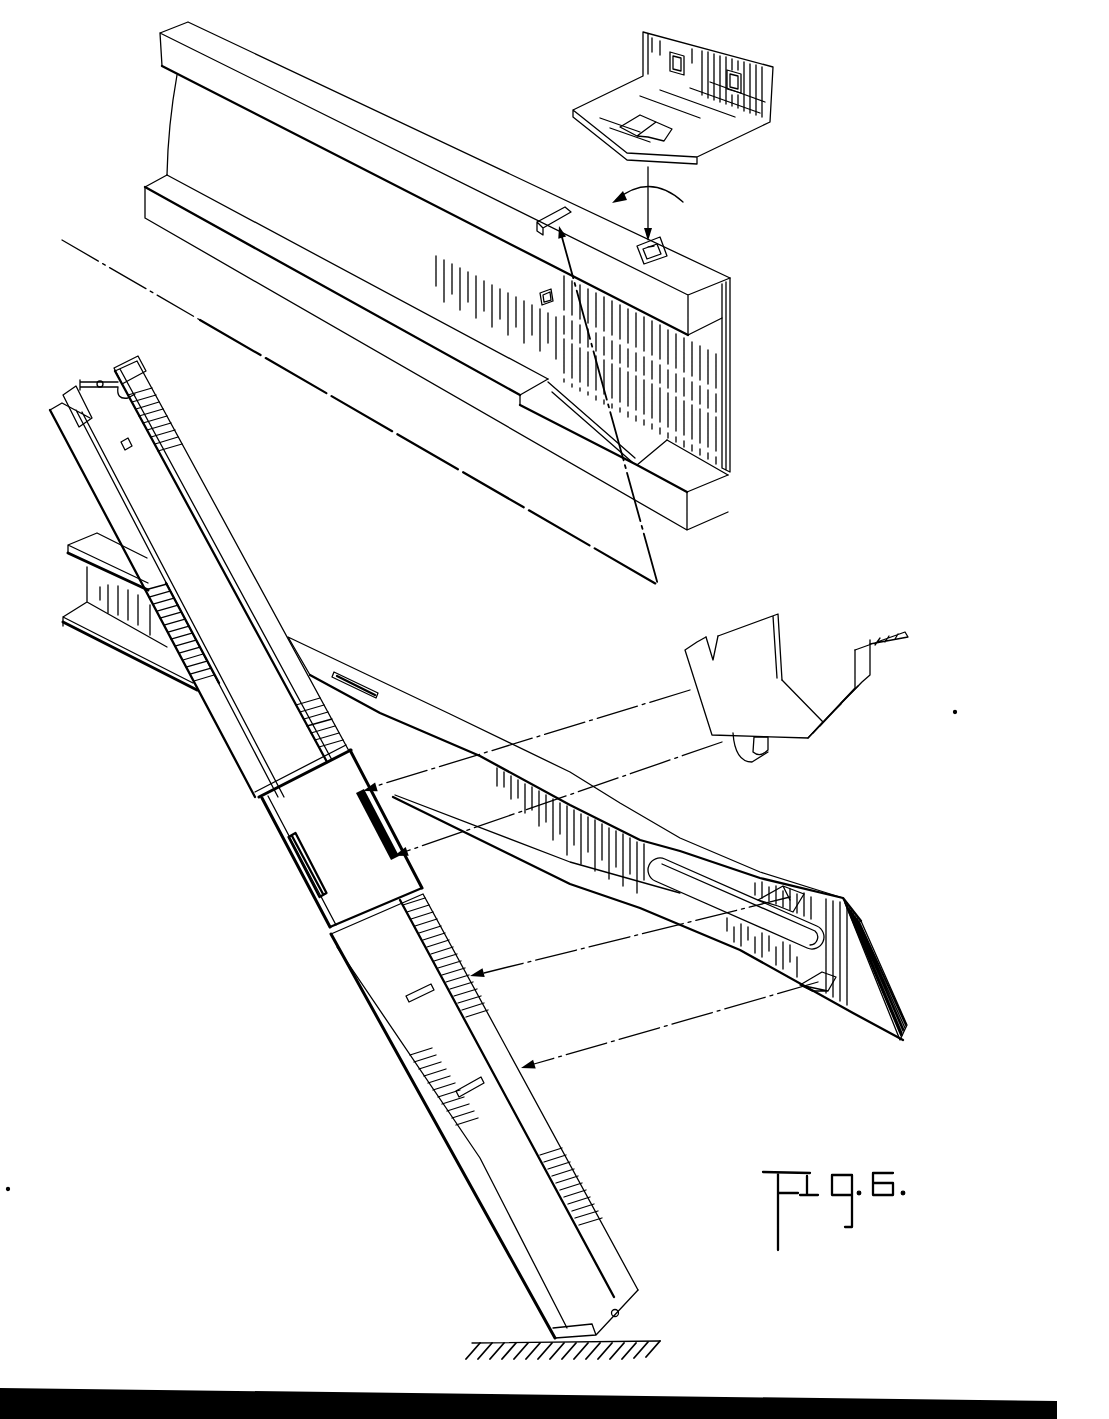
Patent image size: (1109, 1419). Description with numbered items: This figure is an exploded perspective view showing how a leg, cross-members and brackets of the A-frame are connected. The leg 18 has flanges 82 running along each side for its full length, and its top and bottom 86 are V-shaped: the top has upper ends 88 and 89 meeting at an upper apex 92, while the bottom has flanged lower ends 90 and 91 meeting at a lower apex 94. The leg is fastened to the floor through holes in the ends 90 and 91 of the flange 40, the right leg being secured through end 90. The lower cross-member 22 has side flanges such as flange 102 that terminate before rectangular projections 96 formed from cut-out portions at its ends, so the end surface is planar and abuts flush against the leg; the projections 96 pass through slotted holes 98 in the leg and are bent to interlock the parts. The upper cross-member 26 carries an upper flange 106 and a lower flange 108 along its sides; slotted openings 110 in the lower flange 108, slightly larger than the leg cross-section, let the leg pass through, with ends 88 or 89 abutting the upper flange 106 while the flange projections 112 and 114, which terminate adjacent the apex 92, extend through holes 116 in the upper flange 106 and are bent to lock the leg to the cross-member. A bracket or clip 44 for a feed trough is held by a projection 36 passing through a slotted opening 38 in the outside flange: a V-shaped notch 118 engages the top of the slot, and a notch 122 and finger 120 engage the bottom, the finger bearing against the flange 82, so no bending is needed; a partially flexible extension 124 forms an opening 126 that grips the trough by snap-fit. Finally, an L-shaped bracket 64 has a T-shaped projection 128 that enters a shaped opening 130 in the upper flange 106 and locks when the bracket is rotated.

The leg 18 is at (385, 947).
The lower cross-member 22 is at (628, 850).
The upper cross-member 26 is at (368, 254).
The projection 36 is at (718, 692).
The slotted opening 38 is at (310, 862).
The flange 40 is at (652, 1308).
The bracket (clip) 44 is at (760, 632).
The bracket 64 is at (728, 118).
The flange 82 is at (146, 574).
The bottom 86 is at (655, 1248).
The upper end 88 is at (136, 393).
The upper end 89 is at (93, 409).
The flanged lower end 90 is at (567, 1326).
The flanged lower end 91 is at (640, 1302).
The upper apex 92 is at (99, 380).
The lower apex 94 is at (640, 1340).
The rectangular projection 96 is at (790, 888).
The slotted hole 98 is at (425, 987).
The flange 102 is at (412, 722).
The upper flange 106 is at (402, 128).
The lower flange 108 is at (318, 277).
The slotted opening 110 is at (640, 440).
The projection 112 is at (138, 364).
The projection 114 is at (76, 400).
The hole 116 is at (545, 205).
The V-shaped notch 118 is at (708, 638).
The finger 120 is at (770, 752).
The notch 122 is at (740, 760).
The partially flexible extension 124 is at (880, 633).
The opening 126 is at (808, 684).
The T-shaped projection 128 is at (636, 117).
The shaped opening 130 is at (667, 244).